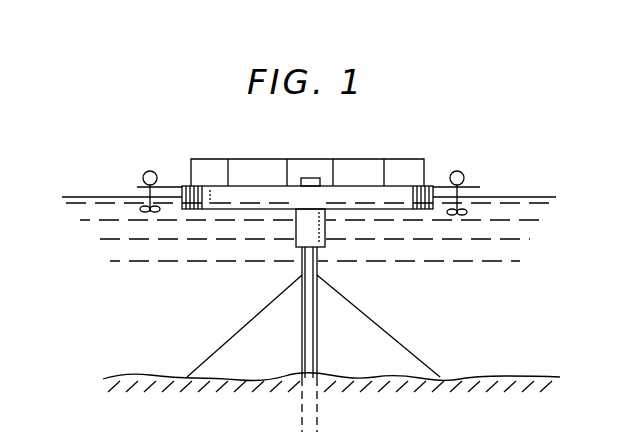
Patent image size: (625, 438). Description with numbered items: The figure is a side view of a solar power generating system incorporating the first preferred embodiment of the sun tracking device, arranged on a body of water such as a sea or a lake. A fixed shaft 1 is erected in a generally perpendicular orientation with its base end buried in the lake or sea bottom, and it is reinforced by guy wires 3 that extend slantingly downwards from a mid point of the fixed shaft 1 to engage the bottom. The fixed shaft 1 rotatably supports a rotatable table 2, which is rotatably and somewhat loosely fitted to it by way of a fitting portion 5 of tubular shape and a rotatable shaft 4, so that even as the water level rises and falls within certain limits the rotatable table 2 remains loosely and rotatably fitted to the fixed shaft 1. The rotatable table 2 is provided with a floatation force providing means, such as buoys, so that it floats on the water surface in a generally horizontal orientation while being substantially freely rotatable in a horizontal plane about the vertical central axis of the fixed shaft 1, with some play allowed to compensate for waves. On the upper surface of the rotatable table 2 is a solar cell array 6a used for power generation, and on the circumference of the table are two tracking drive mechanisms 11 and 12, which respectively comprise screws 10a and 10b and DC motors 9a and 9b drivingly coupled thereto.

The fixed shaft 1 is at (300, 333).
The rotatable table 2 is at (220, 193).
The guy wires 3 is at (390, 336).
The rotatable shaft 4 is at (312, 181).
The fitting portion 5 is at (300, 236).
The solar cell array 6a is at (408, 167).
The DC motor 9a is at (150, 170).
The DC motor 9b is at (462, 172).
The screw 10a is at (150, 215).
The screw 10b is at (456, 217).
The tracking drive mechanism 11 is at (120, 188).
The tracking drive mechanism 12 is at (476, 178).